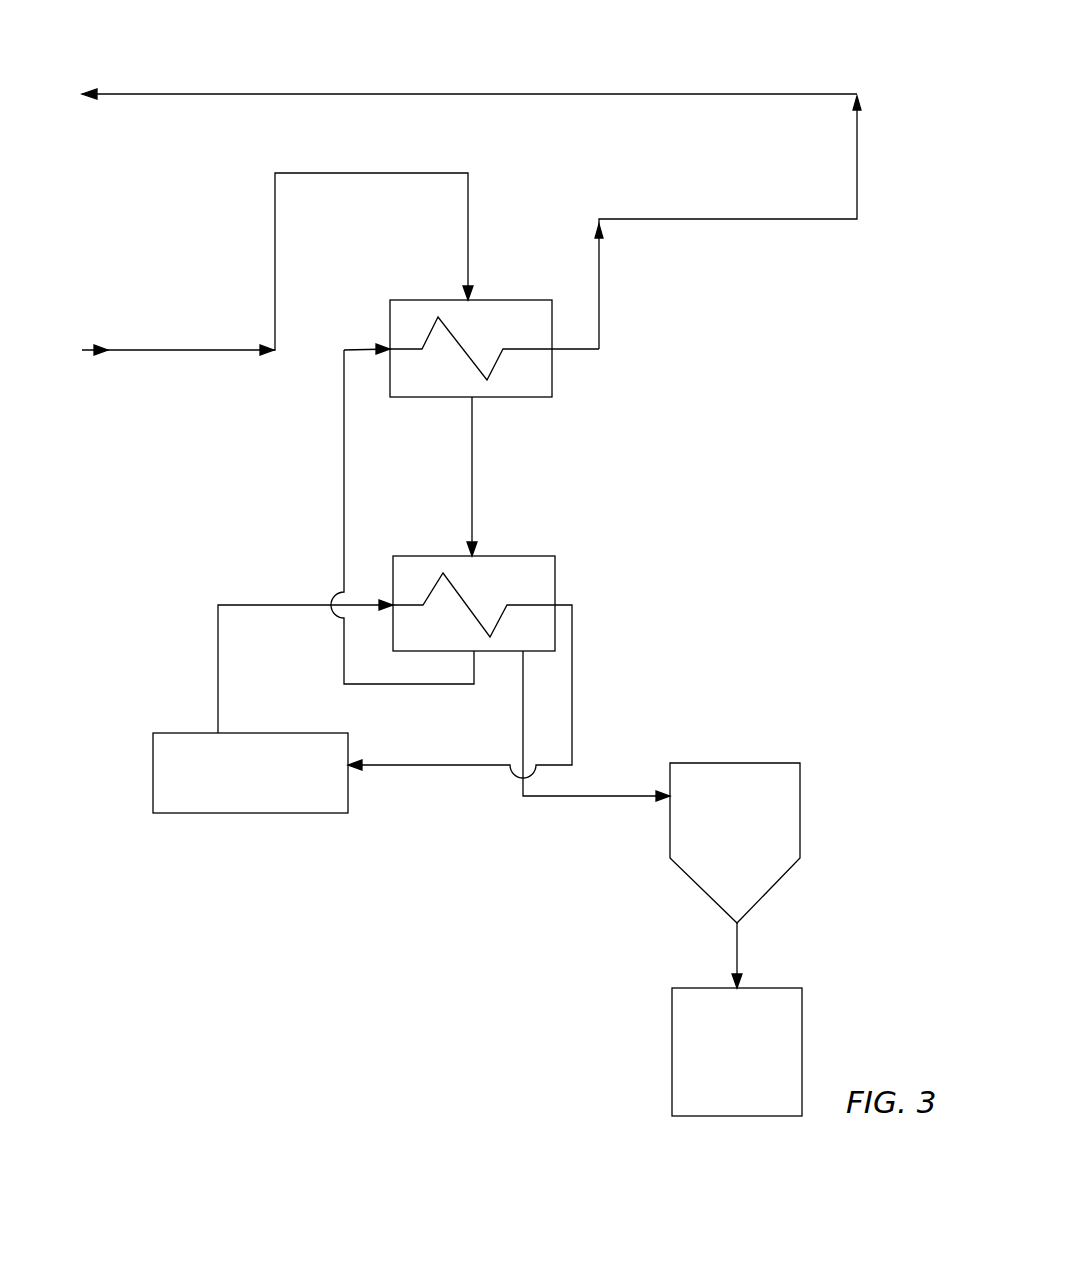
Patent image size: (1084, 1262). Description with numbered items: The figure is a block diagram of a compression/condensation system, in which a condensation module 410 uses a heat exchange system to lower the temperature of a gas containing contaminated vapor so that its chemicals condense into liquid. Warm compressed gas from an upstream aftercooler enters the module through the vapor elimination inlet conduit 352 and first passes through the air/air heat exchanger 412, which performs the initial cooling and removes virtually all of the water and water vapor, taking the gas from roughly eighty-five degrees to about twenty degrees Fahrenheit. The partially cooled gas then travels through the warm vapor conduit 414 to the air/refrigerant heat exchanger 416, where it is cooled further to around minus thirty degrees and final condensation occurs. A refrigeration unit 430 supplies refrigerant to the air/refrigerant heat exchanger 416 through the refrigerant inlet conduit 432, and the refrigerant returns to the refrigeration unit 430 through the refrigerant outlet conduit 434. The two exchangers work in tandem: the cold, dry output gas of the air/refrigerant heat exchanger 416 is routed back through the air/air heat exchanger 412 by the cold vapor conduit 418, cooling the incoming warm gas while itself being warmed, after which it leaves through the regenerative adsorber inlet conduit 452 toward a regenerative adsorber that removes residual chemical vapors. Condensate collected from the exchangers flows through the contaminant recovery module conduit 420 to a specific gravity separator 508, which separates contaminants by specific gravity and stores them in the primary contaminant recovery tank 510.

The vapor elimination inlet conduit 352 is at (172, 352).
The condensation module 410 is at (753, 42).
The air/air heat exchanger 412 is at (536, 300).
The warm vapor conduit 414 is at (472, 440).
The air/refrigerant heat exchanger 416 is at (532, 565).
The cold vapor conduit 418 is at (344, 470).
The contaminant recovery module conduit 420 is at (598, 797).
The refrigeration unit 430 is at (240, 814).
The refrigerant inlet conduit 432 is at (218, 667).
The refrigerant outlet conduit 434 is at (572, 664).
The regenerative adsorber inlet conduit 452 is at (418, 94).
The specific gravity separator 508 is at (770, 815).
The primary contaminant recovery tank 510 is at (790, 1000).